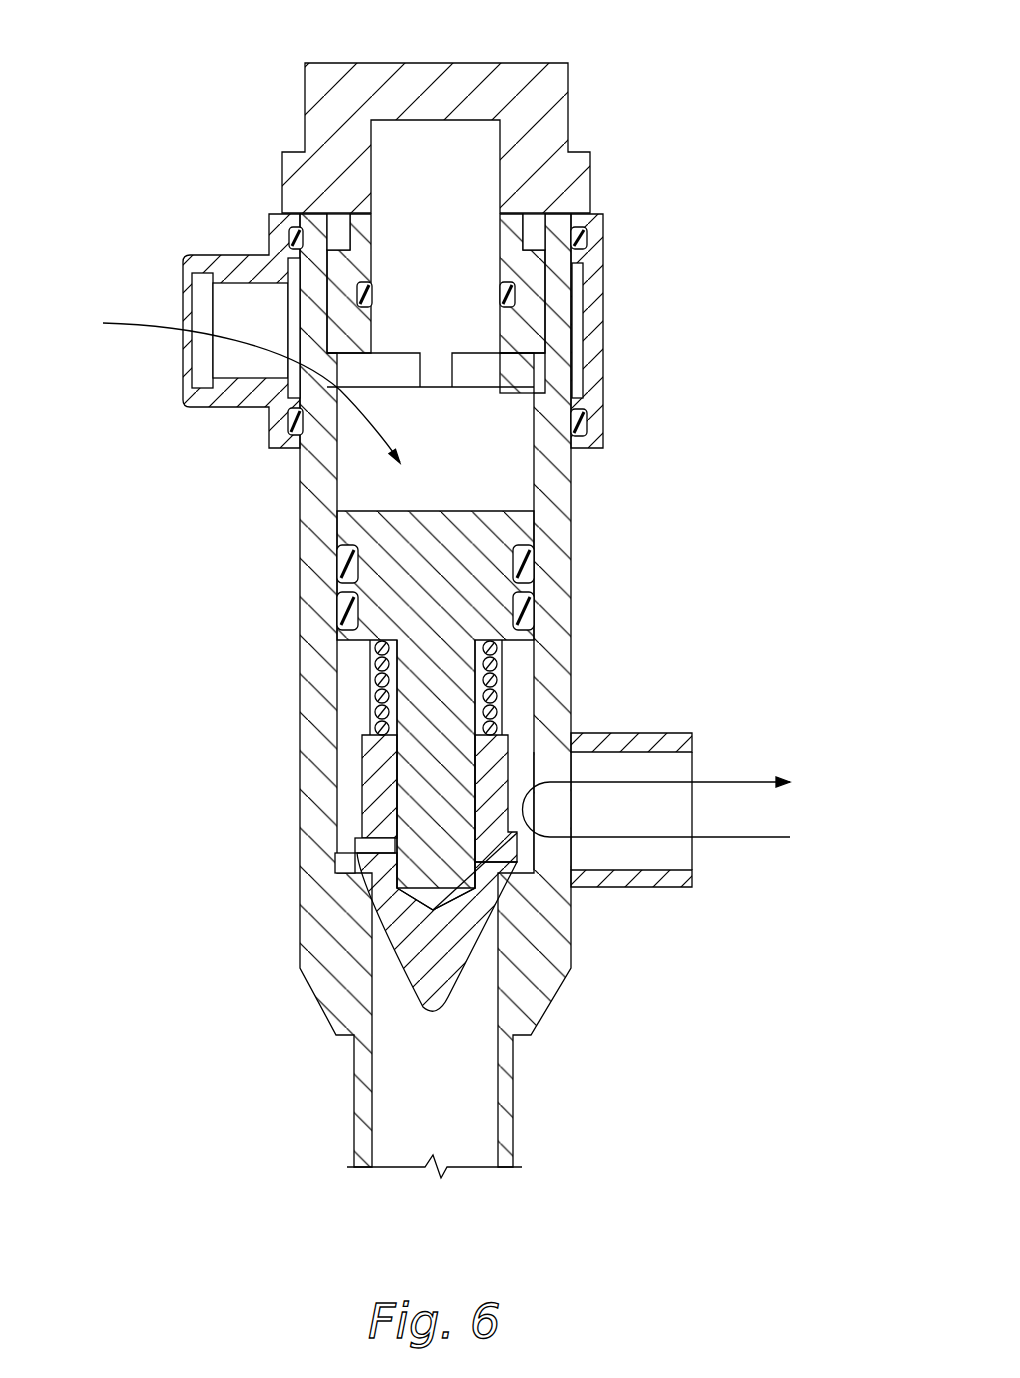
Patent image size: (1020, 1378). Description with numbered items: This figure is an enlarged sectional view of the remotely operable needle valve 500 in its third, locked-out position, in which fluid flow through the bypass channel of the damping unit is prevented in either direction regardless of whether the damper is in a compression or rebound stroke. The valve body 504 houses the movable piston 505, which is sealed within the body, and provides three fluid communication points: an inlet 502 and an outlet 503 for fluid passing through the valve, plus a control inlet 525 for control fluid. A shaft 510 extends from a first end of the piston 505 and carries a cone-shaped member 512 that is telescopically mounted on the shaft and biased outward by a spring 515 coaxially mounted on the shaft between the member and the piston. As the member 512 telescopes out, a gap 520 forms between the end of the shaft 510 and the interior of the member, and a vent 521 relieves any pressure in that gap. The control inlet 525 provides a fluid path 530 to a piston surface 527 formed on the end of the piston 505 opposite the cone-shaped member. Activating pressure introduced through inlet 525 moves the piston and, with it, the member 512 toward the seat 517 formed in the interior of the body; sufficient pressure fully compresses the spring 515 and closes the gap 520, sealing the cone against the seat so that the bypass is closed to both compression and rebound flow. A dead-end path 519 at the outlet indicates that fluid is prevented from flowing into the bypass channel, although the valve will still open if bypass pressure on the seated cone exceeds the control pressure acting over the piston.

The remotely operable needle valve 500 is at (180, 1030).
The inlet 502 is at (498, 1127).
The outlet 503 is at (670, 752).
The valve body 504 is at (436, 62).
The piston 505 is at (475, 597).
The shaft 510 is at (445, 648).
The cone-shaped member 512 is at (405, 935).
The spring 515 is at (485, 690).
The seat 517 is at (335, 855).
The dead-end path arrow 519 is at (738, 837).
The gap 520 is at (413, 807).
The vent 521 is at (352, 840).
The control inlet 525 is at (242, 377).
The piston surface 527 is at (475, 460).
The fluid path 530 is at (250, 363).